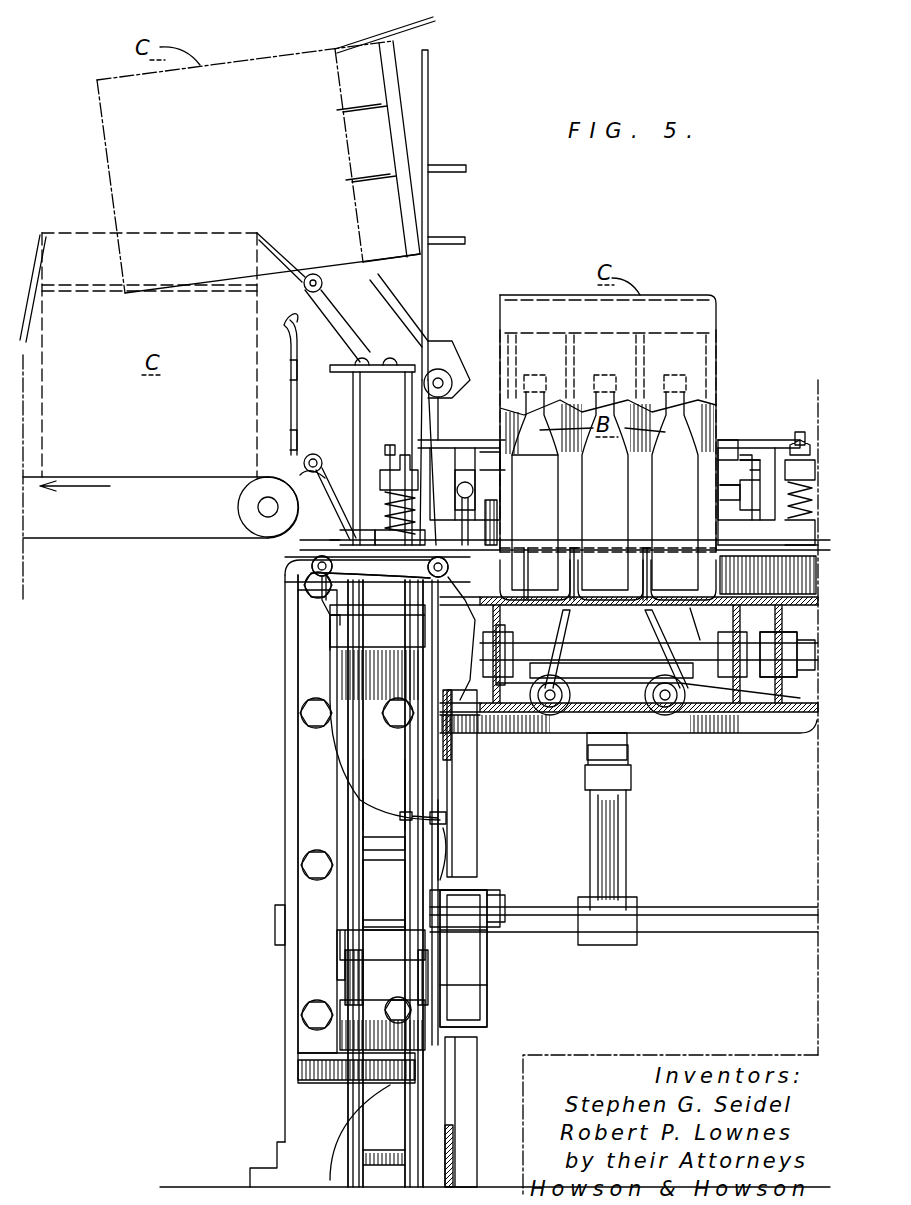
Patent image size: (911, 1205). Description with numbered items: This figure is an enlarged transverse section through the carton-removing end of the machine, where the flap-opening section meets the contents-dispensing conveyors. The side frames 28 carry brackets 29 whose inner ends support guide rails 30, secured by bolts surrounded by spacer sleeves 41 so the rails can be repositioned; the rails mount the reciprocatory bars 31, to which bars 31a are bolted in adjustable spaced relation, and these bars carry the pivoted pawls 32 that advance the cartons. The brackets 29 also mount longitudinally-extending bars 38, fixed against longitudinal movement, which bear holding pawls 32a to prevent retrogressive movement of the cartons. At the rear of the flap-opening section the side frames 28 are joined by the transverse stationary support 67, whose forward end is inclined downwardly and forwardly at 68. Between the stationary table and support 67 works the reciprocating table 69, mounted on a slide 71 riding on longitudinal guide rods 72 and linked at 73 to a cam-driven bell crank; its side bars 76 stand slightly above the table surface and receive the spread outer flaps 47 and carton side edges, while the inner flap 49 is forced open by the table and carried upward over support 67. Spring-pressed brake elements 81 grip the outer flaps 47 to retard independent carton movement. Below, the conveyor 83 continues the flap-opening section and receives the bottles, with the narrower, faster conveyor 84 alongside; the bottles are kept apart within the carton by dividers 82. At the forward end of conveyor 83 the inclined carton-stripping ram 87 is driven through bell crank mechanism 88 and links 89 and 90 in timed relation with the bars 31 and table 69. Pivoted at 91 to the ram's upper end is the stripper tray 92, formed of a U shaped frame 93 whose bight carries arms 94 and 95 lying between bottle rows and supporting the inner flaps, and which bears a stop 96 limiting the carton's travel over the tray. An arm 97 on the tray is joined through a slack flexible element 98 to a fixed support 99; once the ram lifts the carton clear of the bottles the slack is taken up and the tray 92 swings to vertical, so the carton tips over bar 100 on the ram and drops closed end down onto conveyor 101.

The side frames 28 is at (290, 853).
The brackets 29 is at (380, 490).
The guide rails 30 is at (433, 455).
The reciprocatory bars 31 is at (466, 488).
The bars 31a is at (500, 468).
The pawls 32 is at (500, 492).
The holding pawls 32a is at (500, 448).
The longitudinally-extending bars 38 is at (470, 440).
The spacer sleeves 41 is at (455, 505).
The outer flaps 47 is at (372, 37).
The inner flap 49 is at (395, 87).
The transverse stationary support 67 is at (785, 548).
The inclined forward end 68 is at (750, 575).
The reciprocating table 69 is at (585, 580).
The slide 71 is at (560, 633).
The guide rods 72 is at (655, 695).
The link 73 is at (612, 670).
The side bars 76 is at (505, 550).
The spring-pressed brake elements 81 is at (360, 505).
The dividers 82 is at (397, 53).
The conveyor 83 is at (693, 605).
The conveyor 84 is at (800, 612).
The carton-stripping ram 87 is at (410, 750).
The bell crank mechanism 88 is at (590, 880).
The link 89 is at (620, 780).
The link 90 is at (470, 975).
The pivot 91 is at (428, 575).
The stripper tray 92 is at (432, 126).
The U shaped frame 93 is at (430, 290).
The arm 94 is at (465, 240).
The arm 95 is at (466, 168).
The stop 96 is at (500, 520).
The arm 97 is at (312, 578).
The slack flexible element 98 is at (300, 660).
The fixed support 99 is at (455, 830).
The bar 100 is at (332, 433).
The conveyor 101 is at (205, 480).